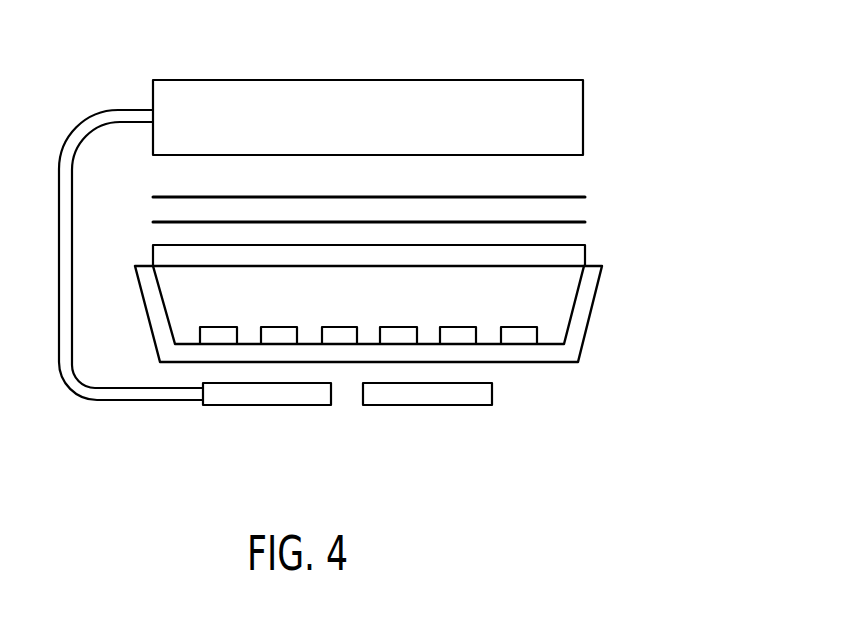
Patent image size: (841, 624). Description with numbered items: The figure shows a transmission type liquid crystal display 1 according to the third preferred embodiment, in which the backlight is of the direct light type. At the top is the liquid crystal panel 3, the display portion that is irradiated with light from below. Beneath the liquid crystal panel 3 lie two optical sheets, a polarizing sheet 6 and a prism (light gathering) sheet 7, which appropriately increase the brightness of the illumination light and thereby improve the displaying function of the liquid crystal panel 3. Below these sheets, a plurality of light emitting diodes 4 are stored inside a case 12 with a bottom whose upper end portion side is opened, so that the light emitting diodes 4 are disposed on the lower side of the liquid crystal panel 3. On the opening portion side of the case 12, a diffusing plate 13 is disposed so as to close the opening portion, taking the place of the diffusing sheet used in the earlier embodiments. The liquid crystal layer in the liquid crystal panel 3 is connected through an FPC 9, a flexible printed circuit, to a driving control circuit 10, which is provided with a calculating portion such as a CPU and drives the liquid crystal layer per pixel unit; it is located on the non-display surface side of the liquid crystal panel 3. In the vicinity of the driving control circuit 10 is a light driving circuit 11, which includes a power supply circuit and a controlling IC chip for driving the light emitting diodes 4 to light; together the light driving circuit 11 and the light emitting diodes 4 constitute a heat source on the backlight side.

The liquid crystal display 1 is at (603, 58).
The liquid crystal panel 3 is at (583, 115).
The light emitting diodes 4 is at (218, 331).
The polarizing sheet 6 is at (558, 196).
The prism sheet 7 is at (558, 221).
The FPC 9 is at (150, 400).
The driving control circuit 10 is at (268, 405).
The light driving circuit 11 is at (428, 395).
The case 12 is at (578, 315).
The diffusing plate 13 is at (558, 257).